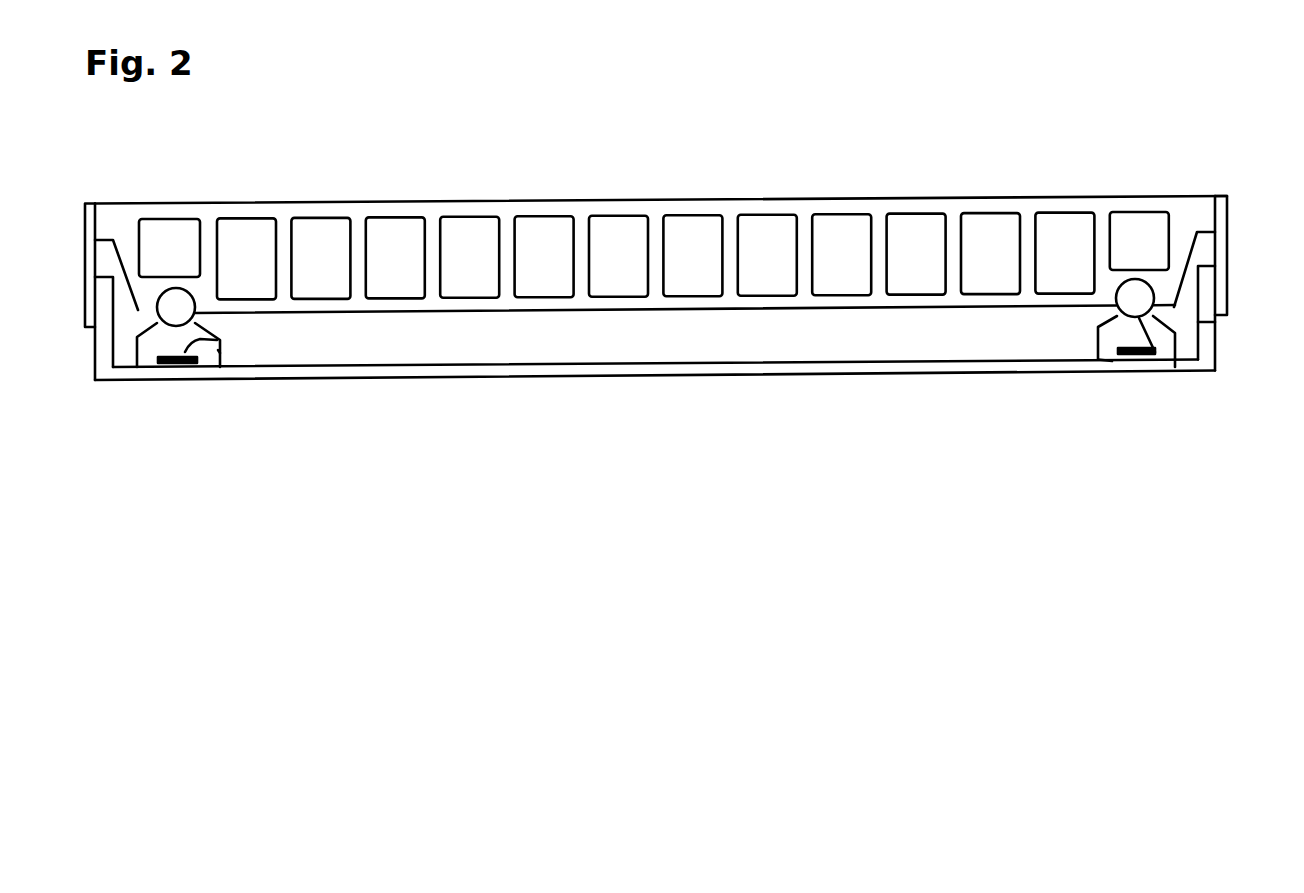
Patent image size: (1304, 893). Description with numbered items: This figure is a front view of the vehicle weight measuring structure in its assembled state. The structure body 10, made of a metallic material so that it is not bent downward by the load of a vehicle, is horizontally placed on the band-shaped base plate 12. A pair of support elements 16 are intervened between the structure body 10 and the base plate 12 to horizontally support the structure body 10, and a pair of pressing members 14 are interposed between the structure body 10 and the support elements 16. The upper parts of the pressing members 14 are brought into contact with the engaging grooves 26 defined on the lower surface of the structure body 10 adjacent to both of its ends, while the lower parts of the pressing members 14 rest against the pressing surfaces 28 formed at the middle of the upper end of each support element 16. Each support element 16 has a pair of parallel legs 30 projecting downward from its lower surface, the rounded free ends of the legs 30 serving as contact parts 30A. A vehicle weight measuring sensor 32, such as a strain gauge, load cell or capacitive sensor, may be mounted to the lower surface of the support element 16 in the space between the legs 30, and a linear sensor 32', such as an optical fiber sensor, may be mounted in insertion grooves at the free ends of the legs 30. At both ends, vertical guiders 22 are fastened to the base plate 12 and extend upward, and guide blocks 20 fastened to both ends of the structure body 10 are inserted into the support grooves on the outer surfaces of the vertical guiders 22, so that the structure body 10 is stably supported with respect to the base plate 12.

The structure body 10 is at (647, 200).
The base plate 12 is at (627, 380).
The pressing member 14 is at (163, 316).
The support element 16 is at (218, 350).
The guide block 20 is at (85, 212).
The vertical guider 22 is at (103, 280).
The engaging groove 26 is at (168, 312).
The pressing surface 28 is at (1173, 367).
The leg 30 is at (147, 362).
The contact part 30A is at (1112, 361).
The sensor 32 is at (670, 338).
The linear sensor 32' is at (660, 395).